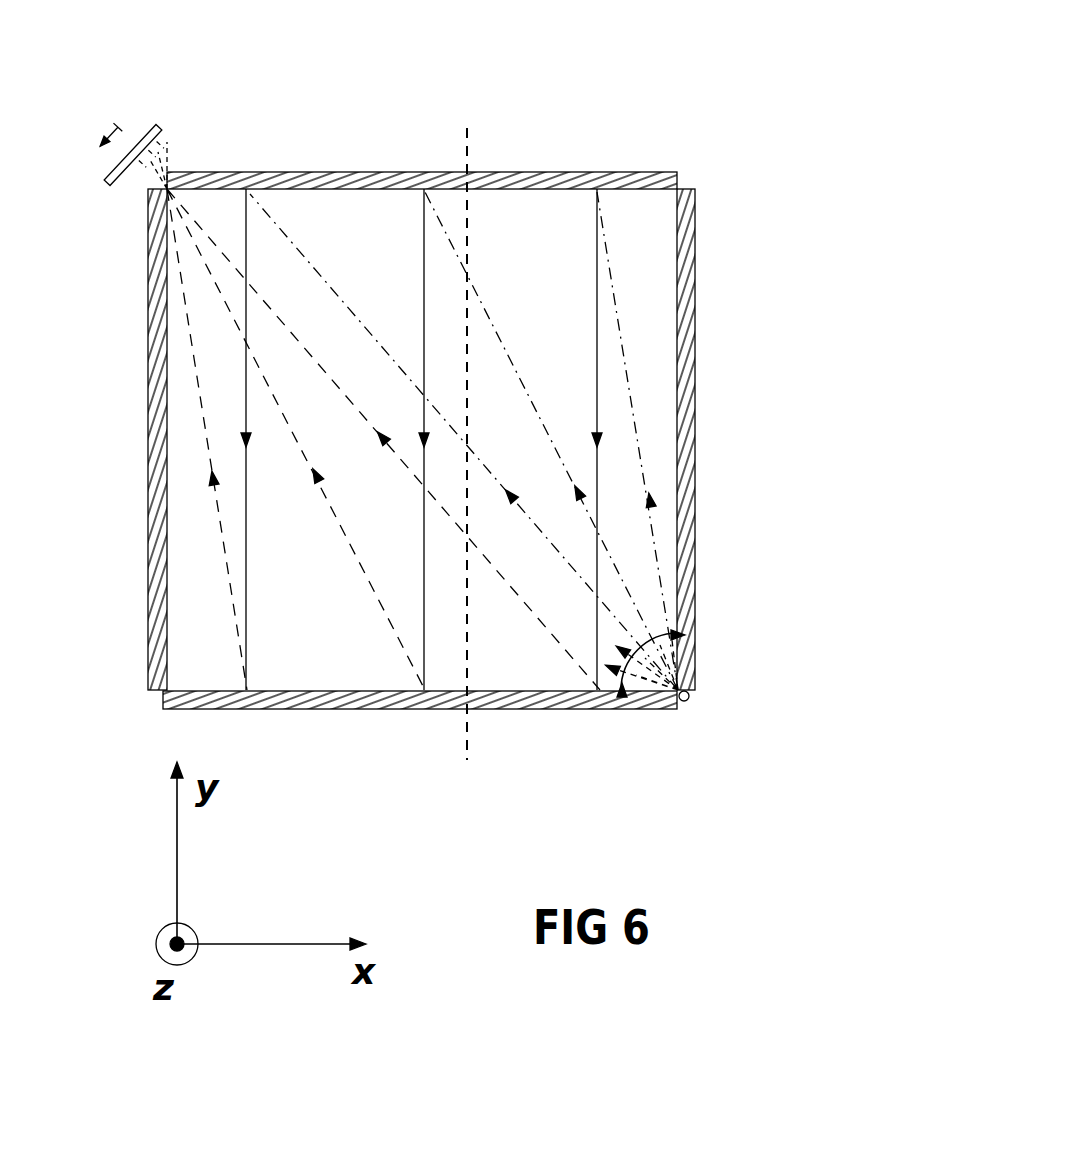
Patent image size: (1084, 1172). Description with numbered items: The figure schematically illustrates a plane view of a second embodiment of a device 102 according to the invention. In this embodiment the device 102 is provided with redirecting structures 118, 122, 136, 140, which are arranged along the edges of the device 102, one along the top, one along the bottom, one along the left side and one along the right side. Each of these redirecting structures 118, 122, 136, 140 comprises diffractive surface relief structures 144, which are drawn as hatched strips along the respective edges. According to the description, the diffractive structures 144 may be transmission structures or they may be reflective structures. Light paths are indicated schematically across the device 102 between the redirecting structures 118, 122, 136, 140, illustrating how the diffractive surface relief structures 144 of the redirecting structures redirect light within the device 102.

The device 102 is at (695, 105).
The redirecting structure 118 is at (340, 176).
The redirecting structure 122 is at (367, 700).
The redirecting structure 136 is at (148, 433).
The redirecting structure 140 is at (695, 408).
The diffractive surface relief structures 144 is at (397, 176).